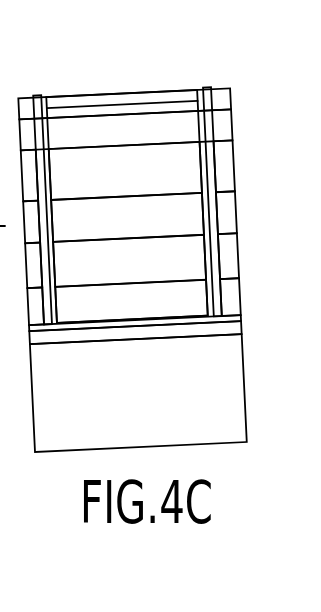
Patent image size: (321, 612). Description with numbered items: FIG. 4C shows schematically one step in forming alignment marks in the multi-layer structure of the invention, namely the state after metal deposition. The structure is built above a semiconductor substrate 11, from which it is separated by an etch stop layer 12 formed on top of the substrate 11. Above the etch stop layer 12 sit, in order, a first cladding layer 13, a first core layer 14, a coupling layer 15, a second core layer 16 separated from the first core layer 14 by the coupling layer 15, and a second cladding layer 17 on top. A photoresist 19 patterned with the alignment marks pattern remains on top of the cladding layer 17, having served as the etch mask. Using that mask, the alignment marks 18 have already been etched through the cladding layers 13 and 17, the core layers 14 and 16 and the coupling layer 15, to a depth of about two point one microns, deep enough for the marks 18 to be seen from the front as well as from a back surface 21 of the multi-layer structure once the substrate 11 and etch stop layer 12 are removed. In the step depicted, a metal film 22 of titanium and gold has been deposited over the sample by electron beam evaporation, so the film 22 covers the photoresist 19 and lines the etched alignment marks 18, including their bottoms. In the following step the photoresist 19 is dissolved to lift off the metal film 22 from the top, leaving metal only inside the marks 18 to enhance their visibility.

The semiconductor substrate 11 is at (240, 397).
The etch stop layer 12 is at (237, 328).
The first cladding layer 13 is at (235, 300).
The first core layer 14 is at (233, 258).
The coupling layer 15 is at (320, 210).
The second core layer 16 is at (228, 165).
The second cladding layer 17 is at (225, 125).
The alignment marks 18 is at (203, 173).
The photoresist 19 is at (94, 113).
The back surface 21 is at (86, 330).
The metal film 22 is at (207, 93).